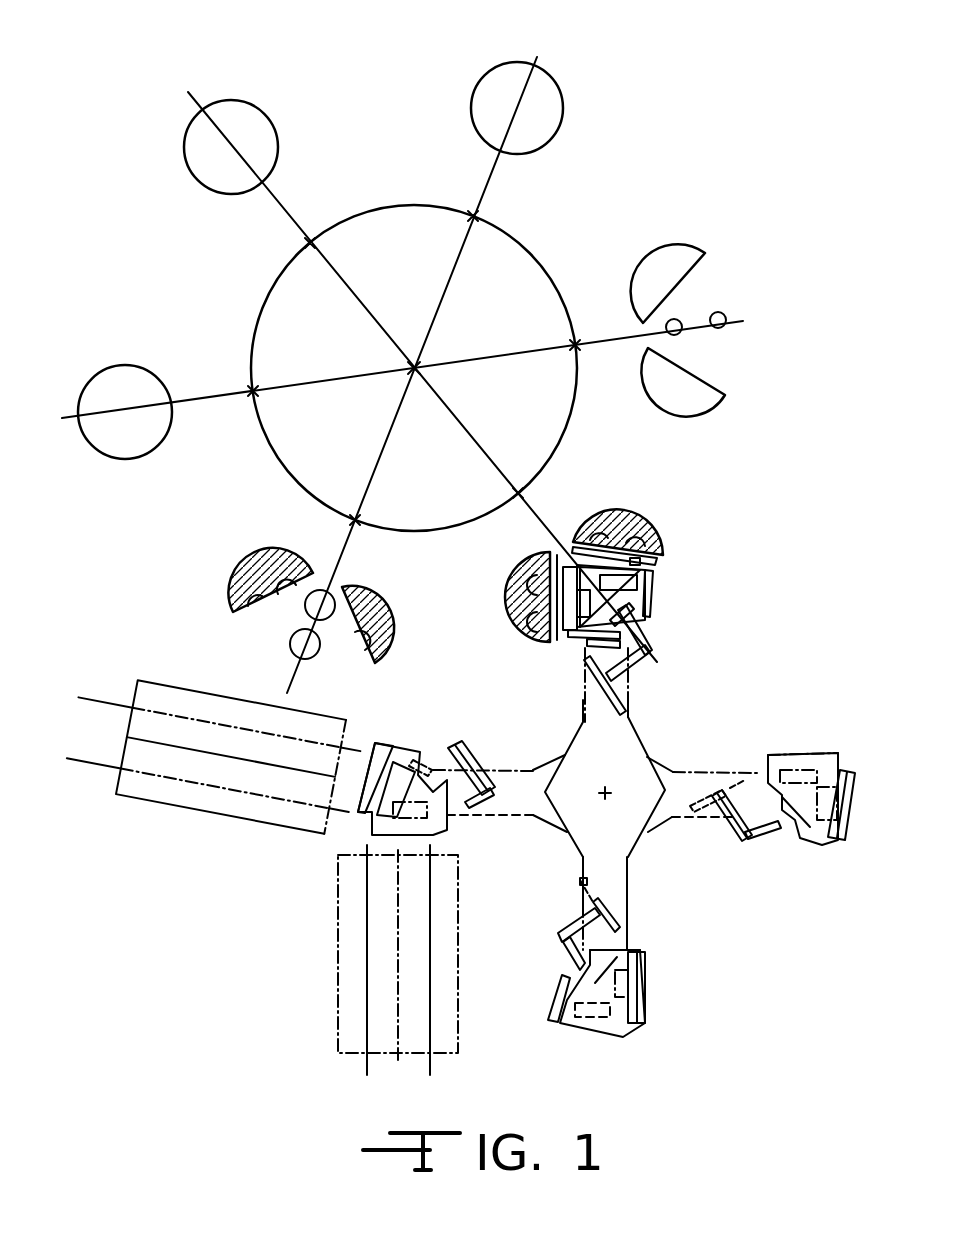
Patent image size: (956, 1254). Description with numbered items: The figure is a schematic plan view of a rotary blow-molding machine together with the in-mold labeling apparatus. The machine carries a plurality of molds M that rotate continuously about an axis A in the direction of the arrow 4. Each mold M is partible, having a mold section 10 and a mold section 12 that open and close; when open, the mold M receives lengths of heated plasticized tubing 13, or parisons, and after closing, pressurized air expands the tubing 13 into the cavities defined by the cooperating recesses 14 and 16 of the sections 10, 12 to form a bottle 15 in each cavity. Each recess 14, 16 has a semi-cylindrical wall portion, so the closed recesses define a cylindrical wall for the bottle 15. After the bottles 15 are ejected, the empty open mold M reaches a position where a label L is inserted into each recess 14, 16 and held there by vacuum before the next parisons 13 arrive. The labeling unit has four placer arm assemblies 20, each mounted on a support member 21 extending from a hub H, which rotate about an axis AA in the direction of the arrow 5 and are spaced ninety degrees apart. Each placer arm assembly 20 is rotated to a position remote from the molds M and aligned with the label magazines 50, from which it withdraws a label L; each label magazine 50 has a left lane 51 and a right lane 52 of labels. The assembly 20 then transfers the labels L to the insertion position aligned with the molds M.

The arrow 4 is at (250, 360).
The axis A is at (414, 366).
The mold M is at (250, 92).
The mold section 10 is at (640, 268).
The mold section 12 is at (654, 372).
The heated plasticized tubing 13 is at (680, 320).
The recess 14 is at (612, 512).
The bottle 15 is at (322, 590).
The recess 16 is at (252, 618).
The label L is at (590, 528).
The placer arm assembly 20 is at (690, 610).
The support member 21 is at (645, 690).
The hub H is at (570, 835).
The axis AA is at (604, 795).
The label magazine 50 is at (145, 818).
The left lane 51 is at (260, 806).
The right lane 52 is at (138, 682).
The arrow 5 is at (490, 990).